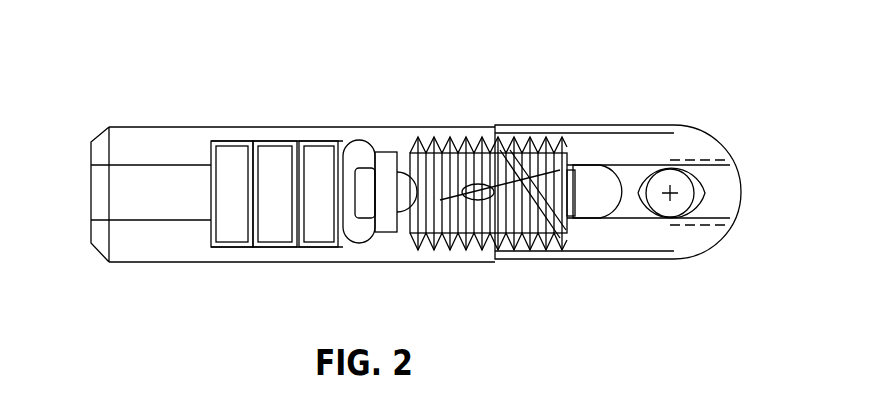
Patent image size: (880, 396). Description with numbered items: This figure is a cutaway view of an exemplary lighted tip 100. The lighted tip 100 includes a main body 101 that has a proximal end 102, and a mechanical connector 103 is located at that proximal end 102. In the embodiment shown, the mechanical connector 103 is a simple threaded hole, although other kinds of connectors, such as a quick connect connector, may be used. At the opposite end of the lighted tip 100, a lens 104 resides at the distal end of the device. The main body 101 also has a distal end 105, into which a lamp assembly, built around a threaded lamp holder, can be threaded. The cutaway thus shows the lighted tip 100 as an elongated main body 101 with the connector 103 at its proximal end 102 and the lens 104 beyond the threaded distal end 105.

The lighted tip 100 is at (540, 72).
The main body 101 is at (192, 245).
The proximal end 102 is at (93, 233).
The mechanical connector 103 is at (146, 165).
The lens 104 is at (620, 252).
The distal end 105 is at (473, 253).